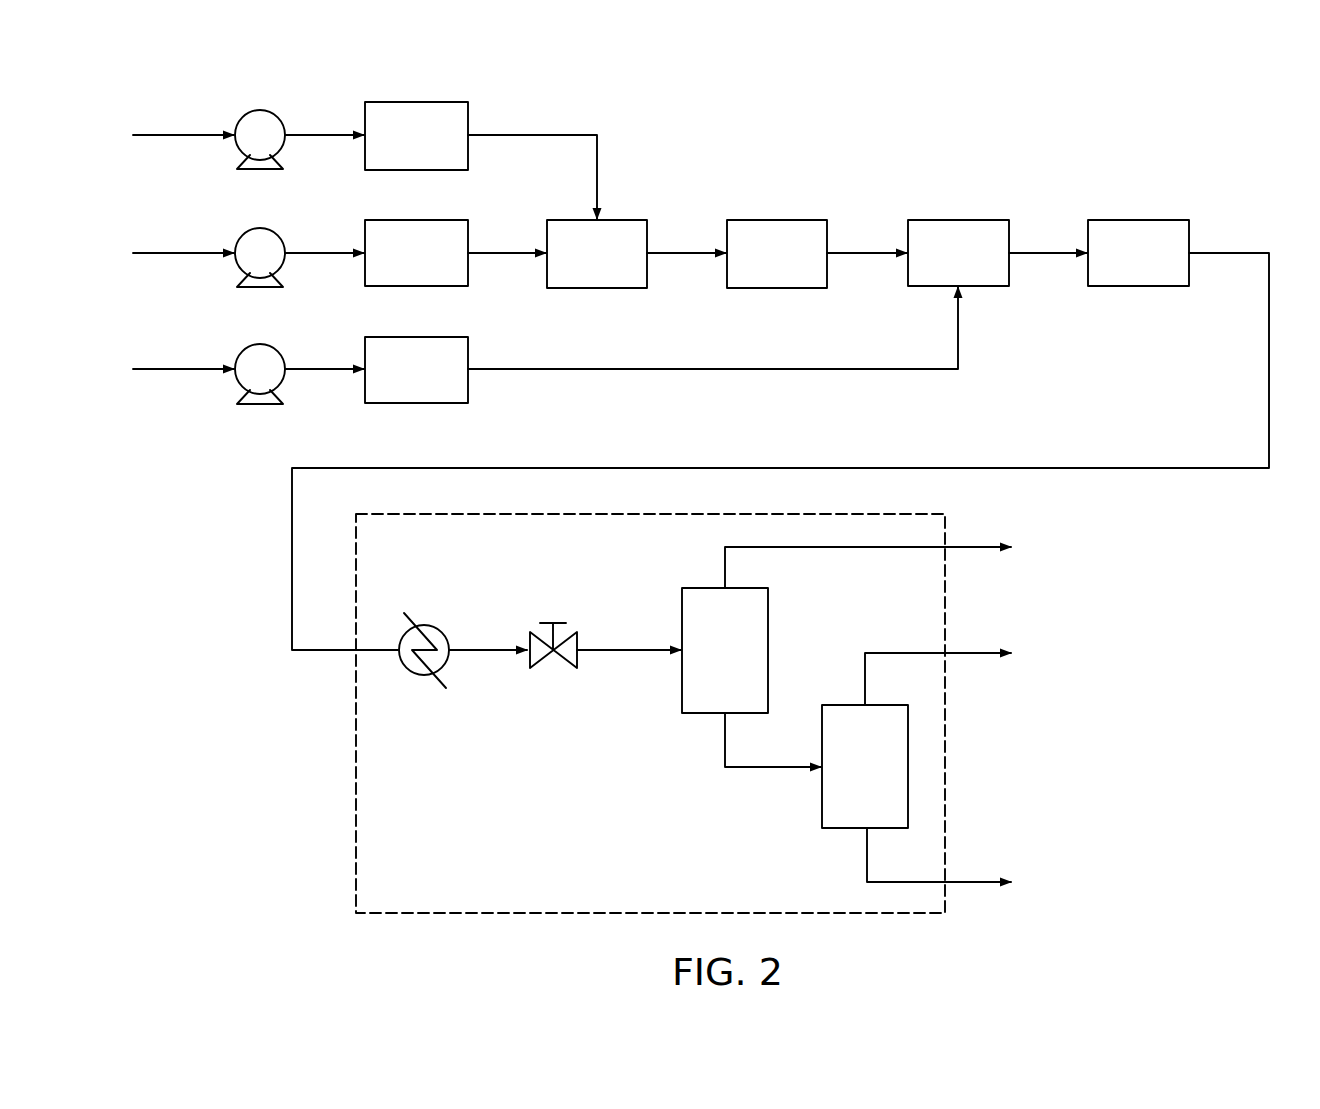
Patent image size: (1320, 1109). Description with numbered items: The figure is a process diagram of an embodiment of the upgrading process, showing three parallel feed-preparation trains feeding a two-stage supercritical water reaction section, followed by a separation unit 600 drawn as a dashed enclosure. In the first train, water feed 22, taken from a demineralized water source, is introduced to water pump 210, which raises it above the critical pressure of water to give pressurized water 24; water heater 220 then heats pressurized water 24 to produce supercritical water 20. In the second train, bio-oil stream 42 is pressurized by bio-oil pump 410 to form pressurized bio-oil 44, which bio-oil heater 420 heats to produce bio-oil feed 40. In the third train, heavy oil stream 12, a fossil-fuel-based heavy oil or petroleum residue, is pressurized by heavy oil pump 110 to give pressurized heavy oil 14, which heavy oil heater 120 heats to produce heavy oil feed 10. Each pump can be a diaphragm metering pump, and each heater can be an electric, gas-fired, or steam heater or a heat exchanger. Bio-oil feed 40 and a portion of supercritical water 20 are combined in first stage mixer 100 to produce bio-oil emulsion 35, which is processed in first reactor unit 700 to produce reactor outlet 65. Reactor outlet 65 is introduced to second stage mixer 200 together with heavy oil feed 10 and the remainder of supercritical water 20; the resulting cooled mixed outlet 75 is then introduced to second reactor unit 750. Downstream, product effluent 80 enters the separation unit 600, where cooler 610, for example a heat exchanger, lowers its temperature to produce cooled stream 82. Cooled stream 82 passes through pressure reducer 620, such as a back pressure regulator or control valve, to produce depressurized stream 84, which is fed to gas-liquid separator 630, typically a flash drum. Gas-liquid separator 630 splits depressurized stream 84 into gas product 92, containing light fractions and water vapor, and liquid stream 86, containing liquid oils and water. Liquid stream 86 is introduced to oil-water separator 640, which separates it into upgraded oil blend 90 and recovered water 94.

The water feed 22 is at (199, 133).
The pressurized water 24 is at (322, 133).
The water pump 210 is at (238, 148).
The water heater 220 is at (442, 147).
The supercritical water 20 is at (570, 133).
The bio-oil stream 42 is at (199, 251).
The pressurized bio-oil 44 is at (322, 251).
The bio-oil pump 410 is at (238, 266).
The bio-oil heater 420 is at (442, 265).
The bio-oil feed 40 is at (492, 251).
The first stage mixer 100 is at (622, 266).
The bio-oil emulsion 35 is at (678, 252).
The first reactor unit 700 is at (802, 266).
The reactor outlet 65 is at (860, 251).
The second stage mixer 200 is at (983, 265).
The cooled mixed outlet 75 is at (1037, 256).
The second reactor unit 750 is at (1163, 265).
The heavy oil stream 12 is at (199, 367).
The pressurized heavy oil 14 is at (322, 367).
The heavy oil pump 110 is at (238, 383).
The heavy oil heater 120 is at (442, 382).
The heavy oil feed 10 is at (712, 371).
The product effluent 80 is at (292, 594).
The separation unit 600 is at (330, 777).
The cooler 610 is at (433, 628).
The cooled stream 82 is at (480, 652).
The pressure reducer 620 is at (573, 666).
The depressurized stream 84 is at (620, 648).
The gas-liquid separator 630 is at (751, 662).
The gas product 92 is at (968, 548).
The liquid stream 86 is at (758, 771).
The oil-water separator 640 is at (891, 780).
The upgraded oil blend 90 is at (970, 655).
The recovered water 94 is at (970, 880).